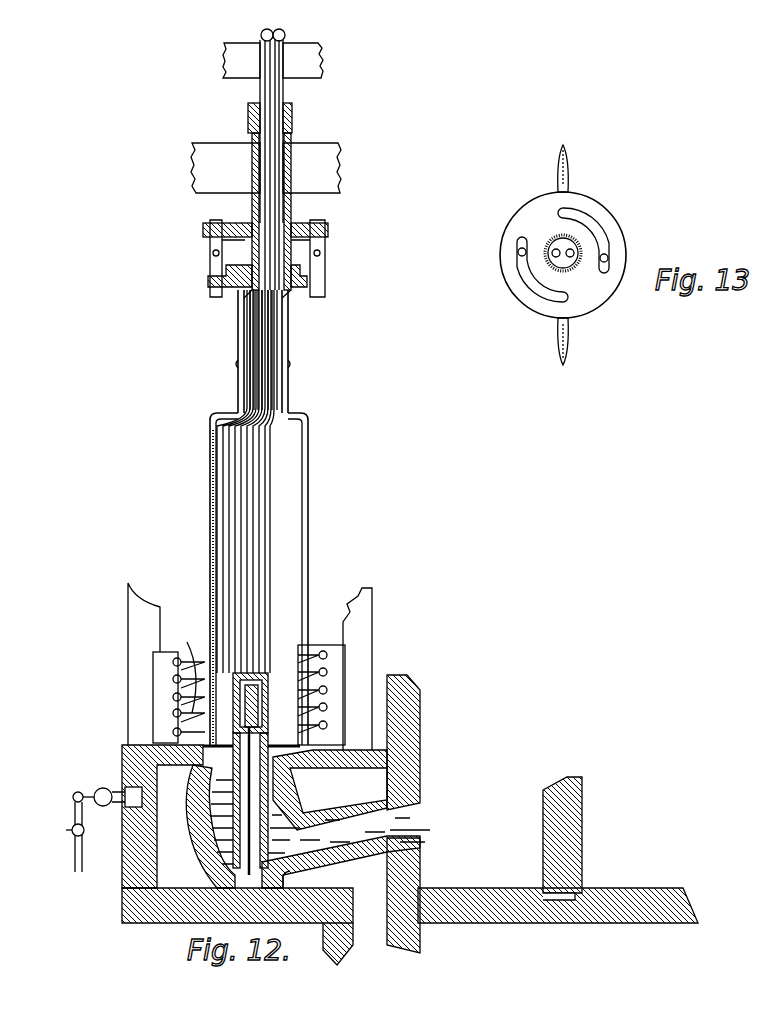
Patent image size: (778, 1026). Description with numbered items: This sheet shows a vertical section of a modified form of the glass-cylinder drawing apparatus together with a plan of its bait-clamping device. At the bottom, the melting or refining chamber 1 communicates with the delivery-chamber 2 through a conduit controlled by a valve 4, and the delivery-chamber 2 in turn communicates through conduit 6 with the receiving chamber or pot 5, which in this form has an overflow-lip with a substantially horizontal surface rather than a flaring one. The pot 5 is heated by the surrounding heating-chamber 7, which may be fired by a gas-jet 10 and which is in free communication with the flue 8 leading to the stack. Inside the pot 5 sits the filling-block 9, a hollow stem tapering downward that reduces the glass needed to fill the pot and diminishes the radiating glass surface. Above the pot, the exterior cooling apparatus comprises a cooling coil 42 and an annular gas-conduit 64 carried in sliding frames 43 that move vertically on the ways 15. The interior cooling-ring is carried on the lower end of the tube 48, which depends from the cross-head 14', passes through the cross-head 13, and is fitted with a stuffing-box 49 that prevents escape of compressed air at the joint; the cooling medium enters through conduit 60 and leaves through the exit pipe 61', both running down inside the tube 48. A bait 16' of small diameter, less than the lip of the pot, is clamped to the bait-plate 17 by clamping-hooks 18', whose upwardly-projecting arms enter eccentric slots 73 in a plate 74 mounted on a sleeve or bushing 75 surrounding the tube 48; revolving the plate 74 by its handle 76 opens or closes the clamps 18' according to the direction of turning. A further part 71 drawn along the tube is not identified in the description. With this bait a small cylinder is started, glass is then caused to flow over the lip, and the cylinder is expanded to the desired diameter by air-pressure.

In FIG. 12, the conduit 60 is at (262, 32).
In FIG. 12, the exit pipe 61' is at (301, 26).
In FIG. 12, the cross-head 14' is at (295, 60).
In FIG. 12, the stuffing-box 49 is at (294, 120).
In FIG. 12, the cross-head 13 is at (266, 168).
In FIG. 12, the sleeve or bushing 75 is at (320, 251).
In FIG. 12, the bait-plate 17 is at (228, 272).
In FIG. 12, the clamping-hooks 18' is at (260, 267).
In FIG. 12, the bait 16' is at (285, 226).
In FIG. 12, the inner tube 71 is at (288, 410).
In FIG. 12, the tube 48 is at (268, 534).
In FIG. 12, the ways 15 is at (250, 666).
In FIG. 12, the cooling coil 42 is at (182, 665).
In FIG. 12, the sliding frames 43 is at (160, 697).
In FIG. 12, the annular gas-conduit 64 is at (170, 734).
In FIG. 12, the valve 4 is at (258, 703).
In FIG. 12, the heating-chamber 7 is at (162, 816).
In FIG. 12, the receiving chamber or pot 5 is at (210, 826).
In FIG. 12, the gas-jet 10 is at (120, 806).
In FIG. 12, the filling-block 9 is at (248, 798).
In FIG. 12, the conduit 6 is at (346, 851).
In FIG. 12, the delivery-chamber 2 is at (440, 814).
In FIG. 12, the melting or refining chamber 1 is at (581, 838).
In FIG. 12, the flue 8 is at (410, 918).
In FIG. 13, the plate 74 is at (530, 208).
In FIG. 13, the eccentric slots 73 is at (607, 232).
In FIG. 13, the handle 76 is at (572, 170).